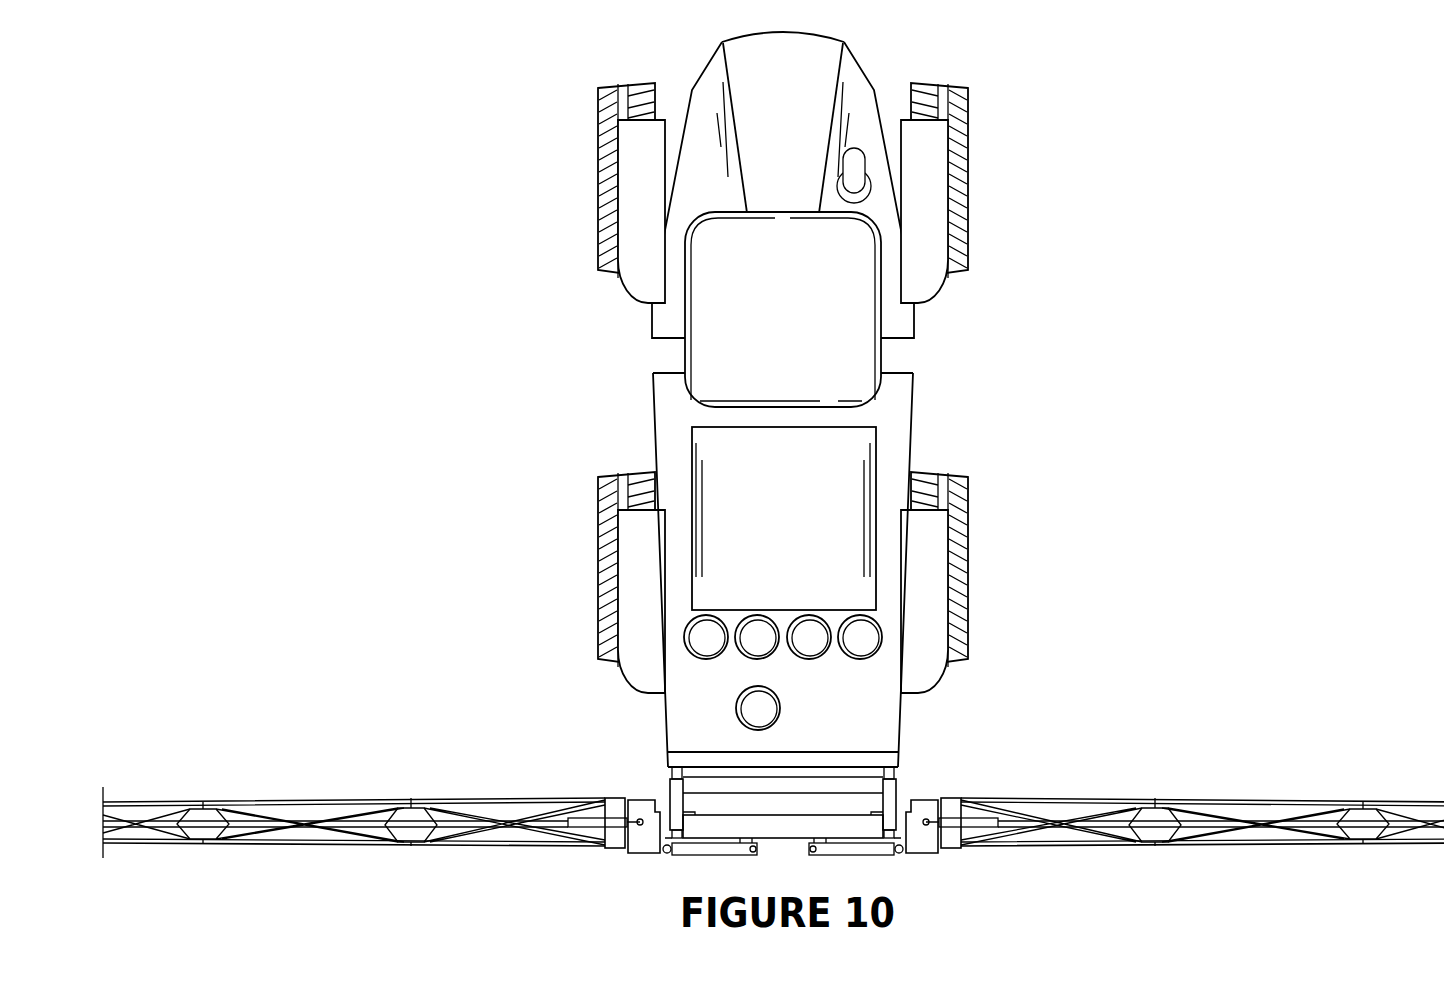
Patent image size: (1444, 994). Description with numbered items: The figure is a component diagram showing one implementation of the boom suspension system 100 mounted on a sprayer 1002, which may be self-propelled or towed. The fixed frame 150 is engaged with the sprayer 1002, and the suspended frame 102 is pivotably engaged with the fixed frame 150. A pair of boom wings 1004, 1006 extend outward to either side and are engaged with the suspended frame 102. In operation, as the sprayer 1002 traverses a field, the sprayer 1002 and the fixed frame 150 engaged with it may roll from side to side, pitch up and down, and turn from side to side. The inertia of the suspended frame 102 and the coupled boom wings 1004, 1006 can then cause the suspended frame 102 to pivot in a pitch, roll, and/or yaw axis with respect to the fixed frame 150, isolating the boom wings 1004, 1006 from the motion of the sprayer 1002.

The sprayer 1002 is at (633, 364).
The boom assembly 100 is at (934, 758).
The fixed frame 150 is at (676, 765).
The suspended frame 102 is at (680, 790).
The boom wing 1004 is at (340, 790).
The boom wing 1006 is at (1168, 790).